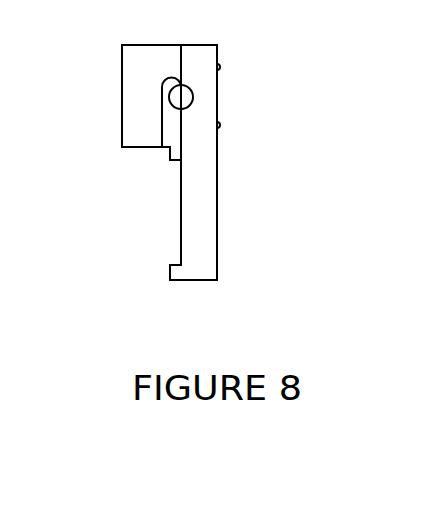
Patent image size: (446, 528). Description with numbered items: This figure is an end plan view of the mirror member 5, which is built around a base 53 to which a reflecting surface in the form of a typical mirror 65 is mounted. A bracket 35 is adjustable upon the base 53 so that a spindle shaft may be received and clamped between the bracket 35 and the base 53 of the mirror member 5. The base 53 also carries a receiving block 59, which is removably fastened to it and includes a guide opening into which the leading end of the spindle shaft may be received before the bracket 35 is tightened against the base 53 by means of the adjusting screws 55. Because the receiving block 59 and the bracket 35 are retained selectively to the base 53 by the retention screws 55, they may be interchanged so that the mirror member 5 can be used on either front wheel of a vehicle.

The mirror member 5 is at (222, 168).
The bracket 35 is at (138, 75).
The base 53 is at (207, 237).
The adjusting screws 55 is at (220, 65).
The receiving block 59 is at (172, 123).
The mirror 65 is at (181, 218).